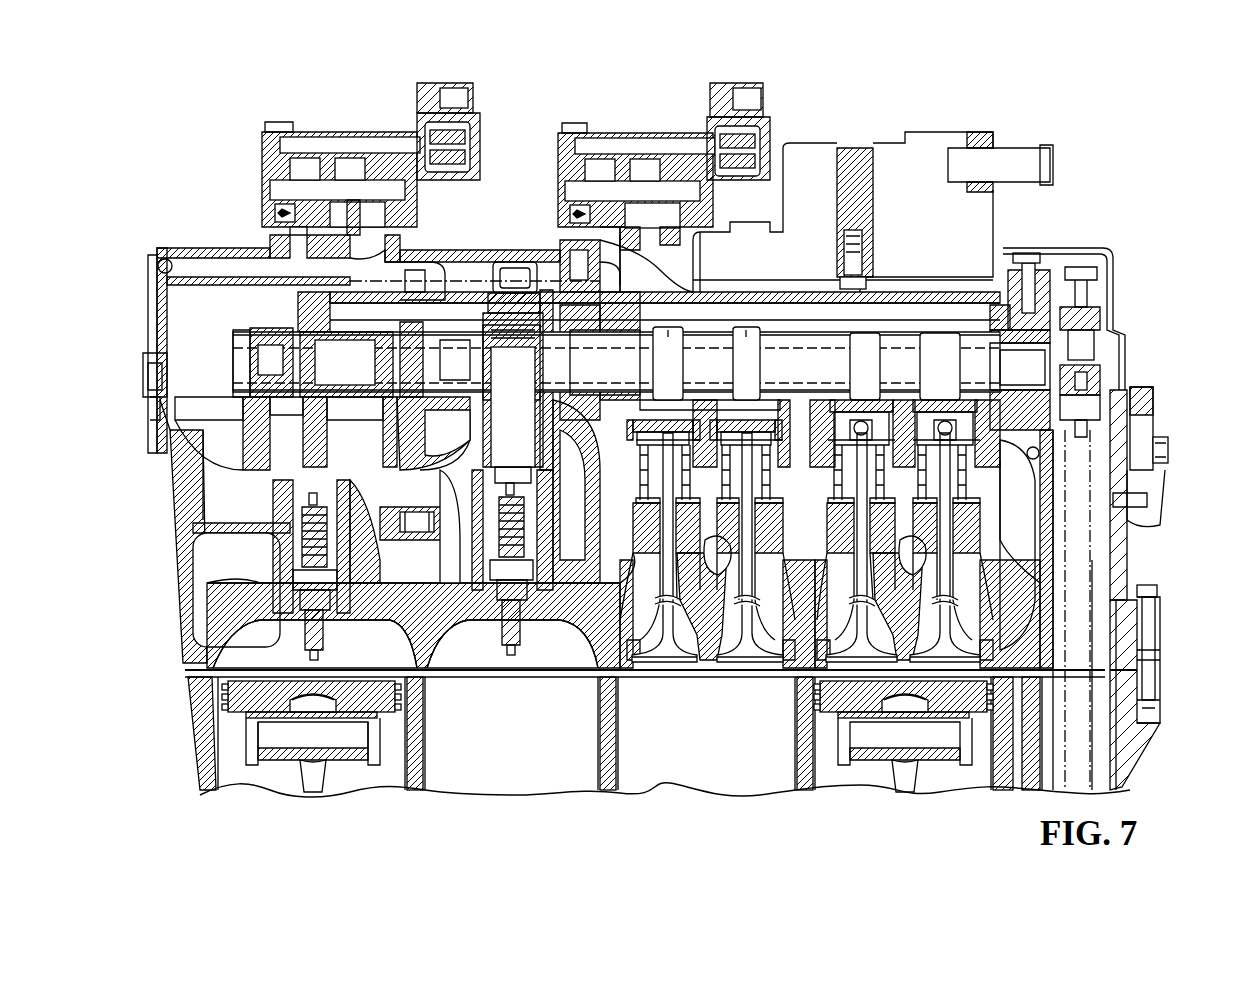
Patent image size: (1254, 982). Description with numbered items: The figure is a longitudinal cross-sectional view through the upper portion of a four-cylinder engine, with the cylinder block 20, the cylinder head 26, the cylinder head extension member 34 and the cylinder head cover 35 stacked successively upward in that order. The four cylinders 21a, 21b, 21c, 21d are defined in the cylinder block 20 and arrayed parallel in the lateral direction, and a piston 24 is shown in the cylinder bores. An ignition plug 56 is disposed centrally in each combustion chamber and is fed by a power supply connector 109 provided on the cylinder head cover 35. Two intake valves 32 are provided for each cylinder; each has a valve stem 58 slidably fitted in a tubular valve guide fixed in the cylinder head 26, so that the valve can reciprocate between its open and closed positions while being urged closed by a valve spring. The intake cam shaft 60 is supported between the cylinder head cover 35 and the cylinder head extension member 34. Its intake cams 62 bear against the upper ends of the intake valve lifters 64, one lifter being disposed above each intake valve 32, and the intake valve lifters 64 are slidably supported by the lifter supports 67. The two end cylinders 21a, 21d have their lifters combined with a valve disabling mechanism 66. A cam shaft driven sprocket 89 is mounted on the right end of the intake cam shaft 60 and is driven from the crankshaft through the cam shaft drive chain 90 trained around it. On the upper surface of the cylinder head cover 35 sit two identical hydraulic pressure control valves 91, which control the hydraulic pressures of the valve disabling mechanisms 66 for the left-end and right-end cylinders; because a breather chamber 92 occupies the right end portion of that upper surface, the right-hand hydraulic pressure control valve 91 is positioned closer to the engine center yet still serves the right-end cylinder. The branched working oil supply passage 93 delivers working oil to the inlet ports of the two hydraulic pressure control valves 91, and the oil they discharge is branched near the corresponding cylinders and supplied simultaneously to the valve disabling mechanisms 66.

The cylinder block 20 is at (188, 745).
The cylinder 21a is at (255, 780).
The cylinder 21b is at (505, 765).
The cylinder 21c is at (694, 765).
The cylinder 21d is at (852, 772).
The piston 24 is at (262, 690).
The cylinder head 26 is at (190, 567).
The intake valve 32 is at (950, 625).
The cylinder head extension member 34 is at (150, 408).
The cylinder head cover 35 is at (160, 290).
The ignition plug 56 is at (500, 522).
The valve stem 58 is at (860, 532).
The intake cam shaft 60 is at (262, 345).
The intake cam 62 is at (877, 330).
The intake valve lifter 64 is at (900, 398).
The valve disabling mechanism 66 is at (920, 412).
The lifter support 67 is at (792, 400).
The cam shaft driven sprocket 89 is at (1135, 442).
The cam shaft drive chain 90 is at (1090, 655).
The hydraulic pressure control valve 91 is at (345, 125).
The breather chamber 92 is at (870, 200).
The working oil supply passage 93 is at (548, 262).
The power supply connector 109 is at (510, 265).